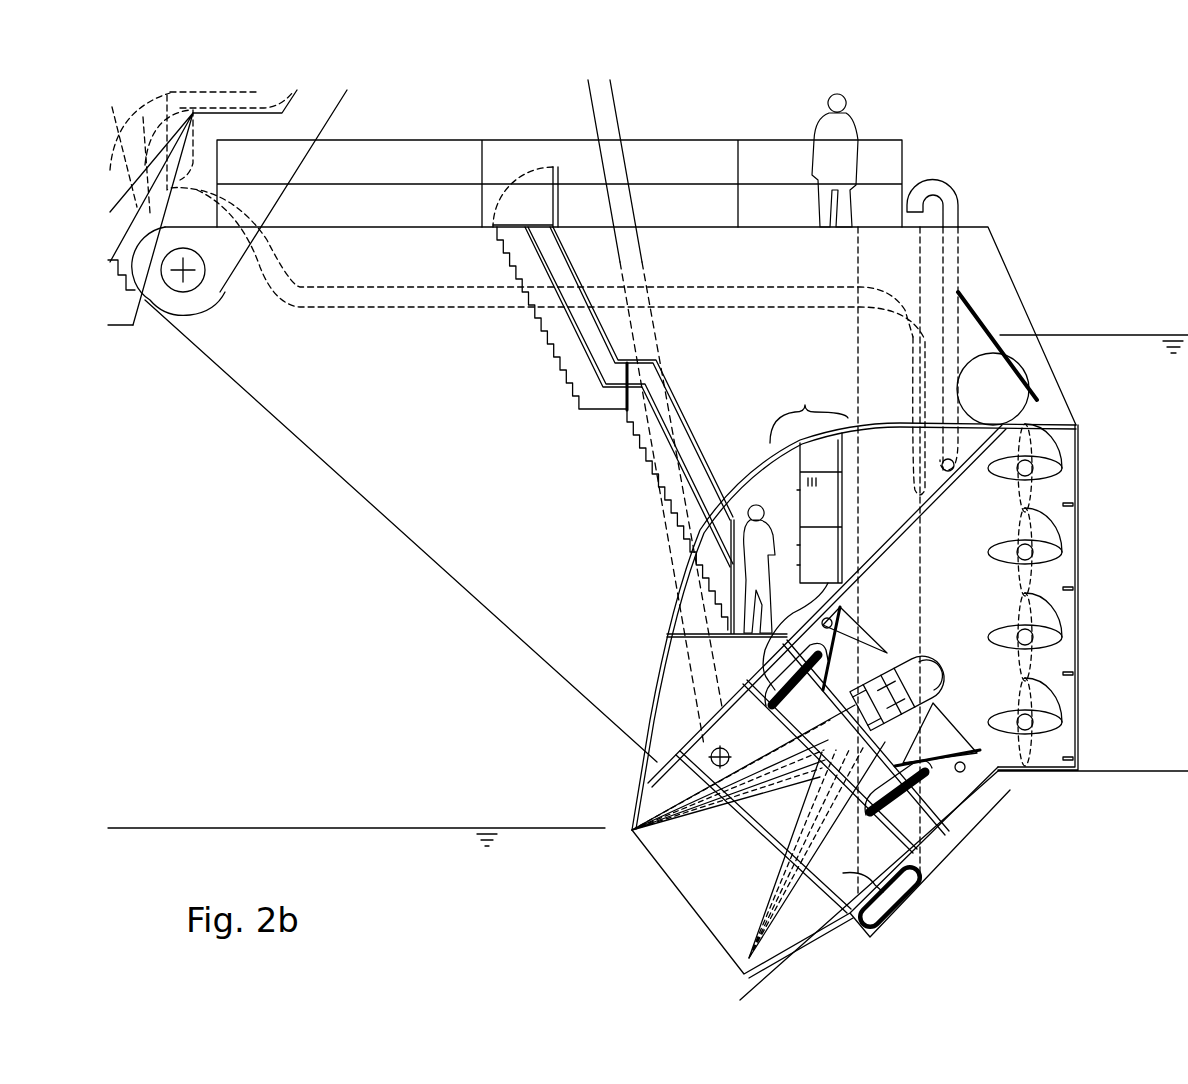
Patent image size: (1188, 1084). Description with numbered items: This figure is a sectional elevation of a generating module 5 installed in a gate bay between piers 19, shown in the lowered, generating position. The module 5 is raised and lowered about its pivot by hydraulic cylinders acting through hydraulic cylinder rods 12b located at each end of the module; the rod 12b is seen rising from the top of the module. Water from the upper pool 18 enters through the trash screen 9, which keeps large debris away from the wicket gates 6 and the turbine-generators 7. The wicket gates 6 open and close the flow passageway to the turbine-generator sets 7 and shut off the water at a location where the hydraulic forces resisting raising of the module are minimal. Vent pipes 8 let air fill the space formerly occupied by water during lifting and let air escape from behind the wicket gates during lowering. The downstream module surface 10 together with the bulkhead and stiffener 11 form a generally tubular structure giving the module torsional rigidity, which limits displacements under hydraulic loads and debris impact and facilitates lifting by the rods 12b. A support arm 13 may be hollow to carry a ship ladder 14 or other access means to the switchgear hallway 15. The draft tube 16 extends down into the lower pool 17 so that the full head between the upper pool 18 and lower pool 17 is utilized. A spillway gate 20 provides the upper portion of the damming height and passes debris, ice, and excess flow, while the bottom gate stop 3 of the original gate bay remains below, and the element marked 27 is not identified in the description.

The bottom gate stop 3 is at (847, 918).
The generating module 5 is at (809, 410).
The wicket gates 6 is at (1063, 553).
The turbine-generators 7 is at (872, 711).
The vent pipes 8 is at (955, 192).
The trash screen 9 is at (1084, 462).
The downstream module surface 10 is at (883, 420).
The bulkhead and stiffener 11 is at (934, 508).
The hydraulic cylinder rods 12b is at (588, 117).
The support arms 13 is at (401, 531).
The ship ladder 14 is at (613, 398).
The switchgear hallway 15 is at (803, 508).
The draft tube 16 is at (758, 831).
The lower pool 17 is at (487, 824).
The upper pool 18 is at (1175, 330).
The piers 19 is at (699, 408).
The spillway gates 20 is at (992, 310).
The sensor and cable 27 is at (900, 255).